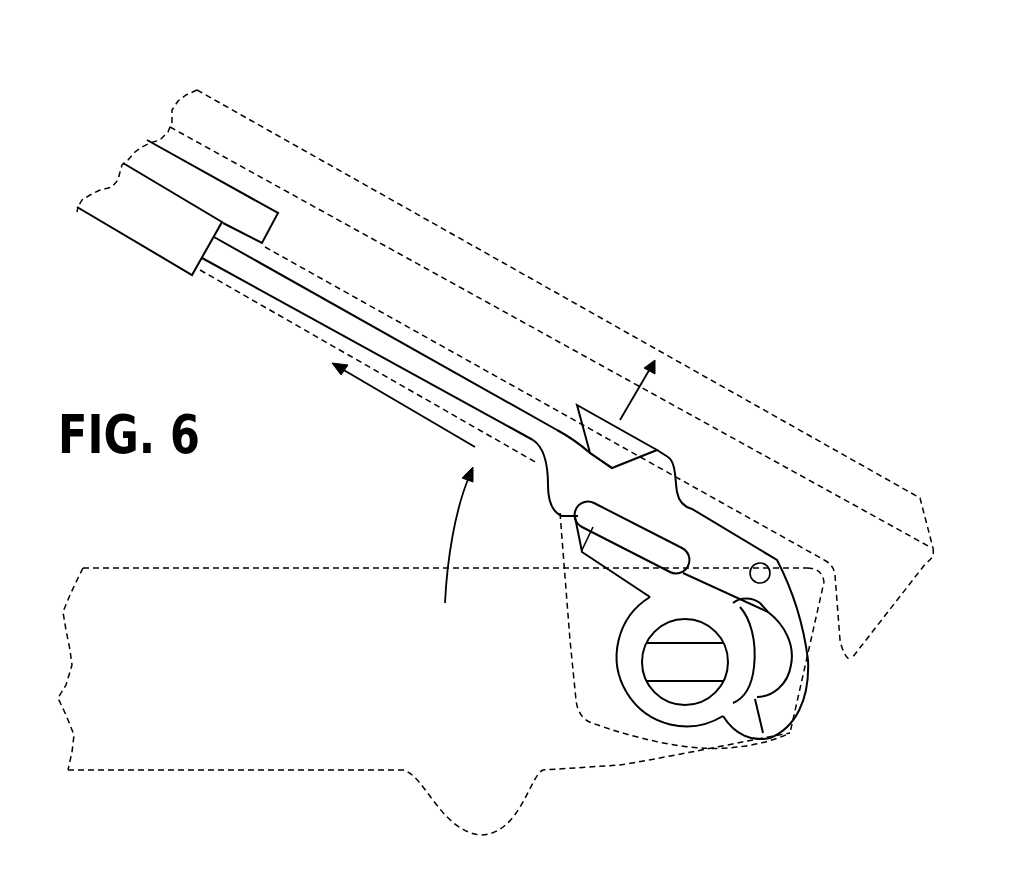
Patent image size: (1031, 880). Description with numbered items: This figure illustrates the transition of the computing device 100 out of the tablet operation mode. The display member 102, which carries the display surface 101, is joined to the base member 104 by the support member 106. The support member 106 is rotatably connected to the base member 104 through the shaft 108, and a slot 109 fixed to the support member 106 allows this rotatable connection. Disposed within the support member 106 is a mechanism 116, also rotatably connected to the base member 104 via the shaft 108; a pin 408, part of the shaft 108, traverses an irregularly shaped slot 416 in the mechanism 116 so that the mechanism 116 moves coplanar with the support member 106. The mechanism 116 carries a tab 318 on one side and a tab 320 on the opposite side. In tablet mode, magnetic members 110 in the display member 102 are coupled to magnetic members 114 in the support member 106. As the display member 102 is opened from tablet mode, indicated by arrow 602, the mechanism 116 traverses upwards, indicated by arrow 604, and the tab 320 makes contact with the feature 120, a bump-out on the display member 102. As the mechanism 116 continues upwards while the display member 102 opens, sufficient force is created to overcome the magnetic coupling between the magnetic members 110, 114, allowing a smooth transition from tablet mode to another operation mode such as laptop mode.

The computing device 100 is at (613, 281).
The display surface 101 is at (540, 282).
The display member 102 is at (925, 565).
The base member 104 is at (267, 567).
The support member 106 is at (378, 350).
The shaft 108 is at (642, 662).
The slot 109 is at (630, 584).
The magnetic members 110 is at (270, 228).
The magnetic members 114 is at (137, 244).
The mechanism 116 is at (427, 355).
The feature 120 is at (630, 430).
The tab 318 is at (553, 513).
The tab 320 is at (672, 463).
The pin 408 is at (790, 666).
The slot 416 is at (761, 738).
The arrow 602 is at (448, 527).
The arrow 604 is at (410, 410).